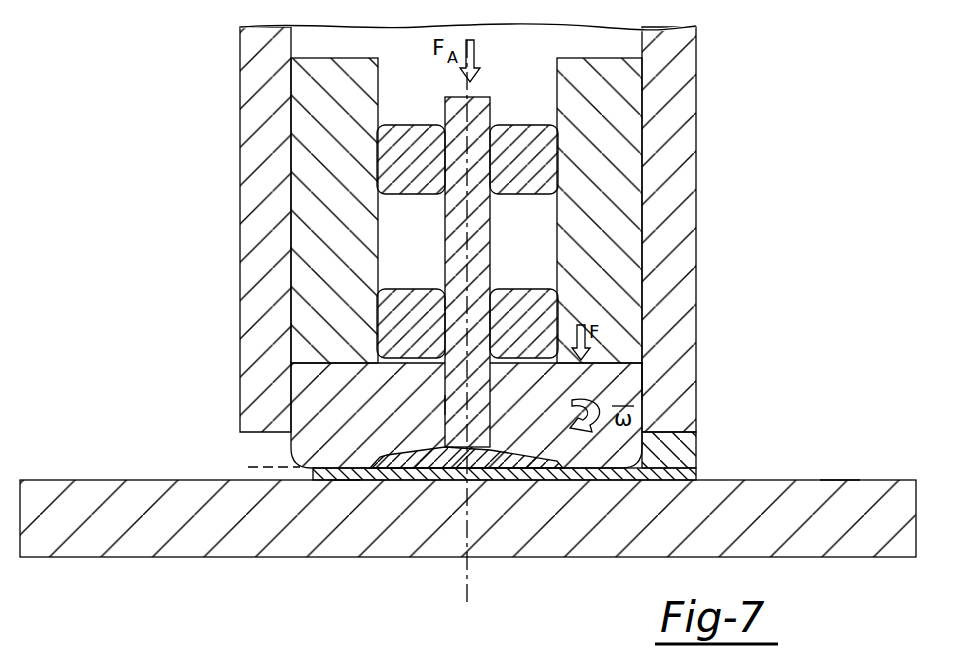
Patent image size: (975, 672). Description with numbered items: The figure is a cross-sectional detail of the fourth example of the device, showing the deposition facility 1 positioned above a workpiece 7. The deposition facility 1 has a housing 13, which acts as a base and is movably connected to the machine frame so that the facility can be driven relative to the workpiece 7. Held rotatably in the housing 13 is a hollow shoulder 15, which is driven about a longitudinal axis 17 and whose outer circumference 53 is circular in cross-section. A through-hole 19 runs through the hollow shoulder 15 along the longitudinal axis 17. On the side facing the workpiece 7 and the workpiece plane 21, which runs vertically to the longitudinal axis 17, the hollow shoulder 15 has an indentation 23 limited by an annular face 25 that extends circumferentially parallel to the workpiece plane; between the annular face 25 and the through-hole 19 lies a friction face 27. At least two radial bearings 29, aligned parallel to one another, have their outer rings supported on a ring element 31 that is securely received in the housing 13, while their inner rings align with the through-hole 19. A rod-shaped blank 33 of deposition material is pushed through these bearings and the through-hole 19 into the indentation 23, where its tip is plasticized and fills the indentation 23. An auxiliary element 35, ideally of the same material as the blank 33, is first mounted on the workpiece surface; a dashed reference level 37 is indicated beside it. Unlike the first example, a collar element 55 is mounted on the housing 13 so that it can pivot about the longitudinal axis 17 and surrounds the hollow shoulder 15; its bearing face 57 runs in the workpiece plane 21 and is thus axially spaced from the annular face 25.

The deposition facility 1 is at (712, 202).
The workpiece 7 is at (280, 531).
The housing 13 is at (672, 100).
The hollow shoulder 15 is at (546, 409).
The longitudinal axis 17 is at (469, 588).
The through-hole 19 is at (445, 406).
The workpiece plane 21 is at (840, 480).
The indentation 23 is at (560, 468).
The annular face 25 is at (640, 496).
The friction face 27 is at (385, 470).
The radial bearings 29 is at (424, 174).
The ring element 31 is at (606, 209).
The blank 33 is at (480, 110).
The auxiliary element 35 is at (437, 466).
The gap 37 is at (275, 476).
The outer circumference 53 is at (642, 380).
The collar element 55 is at (705, 448).
The bearing face 57 is at (345, 482).